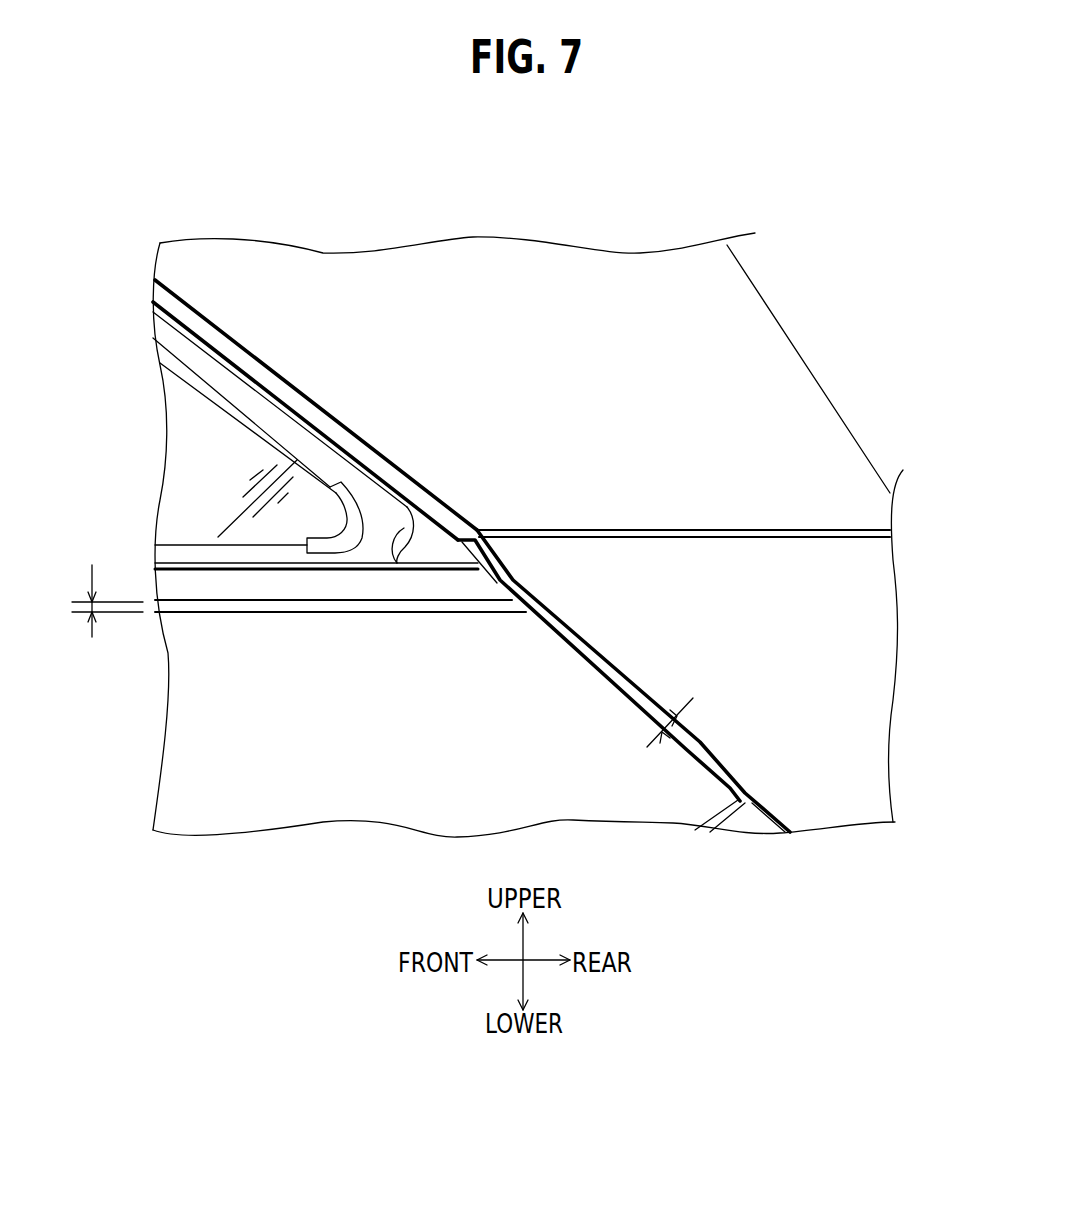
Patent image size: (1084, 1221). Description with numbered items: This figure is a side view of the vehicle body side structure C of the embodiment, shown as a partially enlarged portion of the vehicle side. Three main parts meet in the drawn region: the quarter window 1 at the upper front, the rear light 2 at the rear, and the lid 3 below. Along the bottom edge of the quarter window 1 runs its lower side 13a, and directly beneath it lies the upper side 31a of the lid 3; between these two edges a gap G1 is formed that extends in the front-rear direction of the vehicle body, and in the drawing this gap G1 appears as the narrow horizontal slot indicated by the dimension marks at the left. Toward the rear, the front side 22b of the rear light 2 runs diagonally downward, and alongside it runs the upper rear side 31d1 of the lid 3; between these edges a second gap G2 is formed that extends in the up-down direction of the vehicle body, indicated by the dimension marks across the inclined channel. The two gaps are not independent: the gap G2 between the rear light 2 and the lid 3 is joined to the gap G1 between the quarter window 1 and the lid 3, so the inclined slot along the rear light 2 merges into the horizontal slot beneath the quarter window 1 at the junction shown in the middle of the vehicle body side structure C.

The quarter window 1 is at (212, 433).
The rear light 2 is at (865, 588).
The lid 3 is at (213, 742).
The lower side of the quarter window 13a is at (383, 595).
The front side of the rear light 22b is at (583, 637).
The upper side of the lid 31a is at (303, 608).
The upper rear side of the lid 31d1 is at (697, 745).
The gap G1 is at (96, 596).
The gap G2 is at (690, 717).
The vehicle body side structure C is at (651, 199).